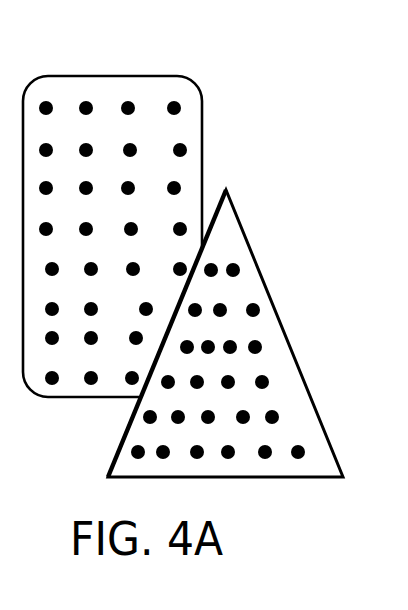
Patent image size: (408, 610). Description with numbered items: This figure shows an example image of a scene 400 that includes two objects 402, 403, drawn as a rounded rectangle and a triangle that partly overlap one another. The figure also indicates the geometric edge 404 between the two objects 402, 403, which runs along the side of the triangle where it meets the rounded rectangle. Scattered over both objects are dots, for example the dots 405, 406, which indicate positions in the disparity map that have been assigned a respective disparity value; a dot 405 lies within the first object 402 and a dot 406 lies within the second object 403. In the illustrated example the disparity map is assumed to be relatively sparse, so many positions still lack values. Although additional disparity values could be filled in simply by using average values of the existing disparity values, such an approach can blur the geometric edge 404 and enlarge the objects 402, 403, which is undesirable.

The image of a scene 400 is at (237, 85).
The object 402 is at (204, 148).
The object 403 is at (241, 215).
The geometric edge 404 is at (171, 332).
The dot 405 is at (127, 101).
The dot 406 is at (263, 376).